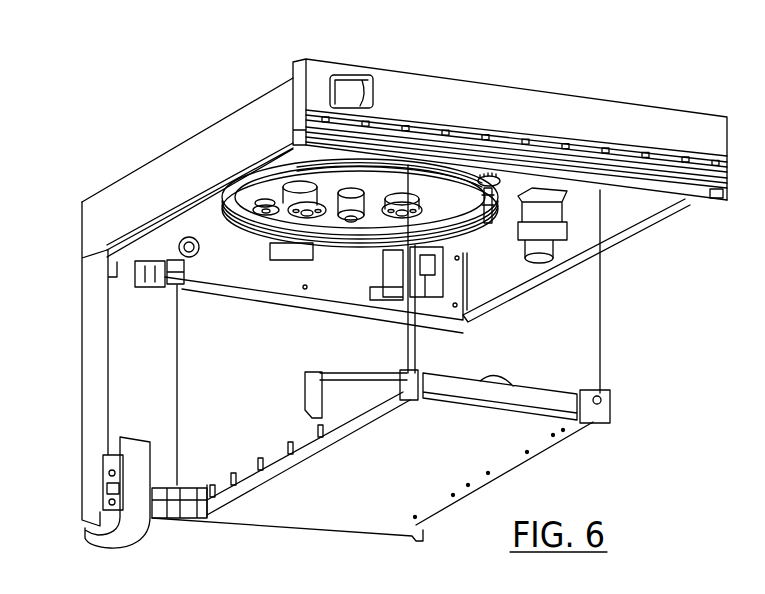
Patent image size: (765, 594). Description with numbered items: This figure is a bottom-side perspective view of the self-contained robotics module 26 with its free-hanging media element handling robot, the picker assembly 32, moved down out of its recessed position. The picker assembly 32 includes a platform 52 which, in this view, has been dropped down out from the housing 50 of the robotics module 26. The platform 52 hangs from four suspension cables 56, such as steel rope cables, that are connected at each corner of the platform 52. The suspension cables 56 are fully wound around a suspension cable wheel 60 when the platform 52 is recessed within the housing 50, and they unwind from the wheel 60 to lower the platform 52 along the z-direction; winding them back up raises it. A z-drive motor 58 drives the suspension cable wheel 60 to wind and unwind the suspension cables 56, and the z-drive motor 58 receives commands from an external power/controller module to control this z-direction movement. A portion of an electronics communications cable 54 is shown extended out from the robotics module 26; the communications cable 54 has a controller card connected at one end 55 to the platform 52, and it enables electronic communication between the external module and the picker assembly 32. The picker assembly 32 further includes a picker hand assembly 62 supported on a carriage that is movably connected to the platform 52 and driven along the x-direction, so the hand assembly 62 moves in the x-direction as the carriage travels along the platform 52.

The robotics module 26 is at (655, 85).
The picker assembly 32 is at (632, 250).
The housing 50 is at (520, 85).
The platform 52 is at (293, 505).
The electronics communications cable 54 is at (351, 88).
The end 55 is at (120, 437).
The suspension cables 56 is at (177, 362).
The z-drive motor 58 is at (557, 228).
The suspension cable wheel 60 is at (447, 207).
The picker hand assembly 62 is at (308, 380).